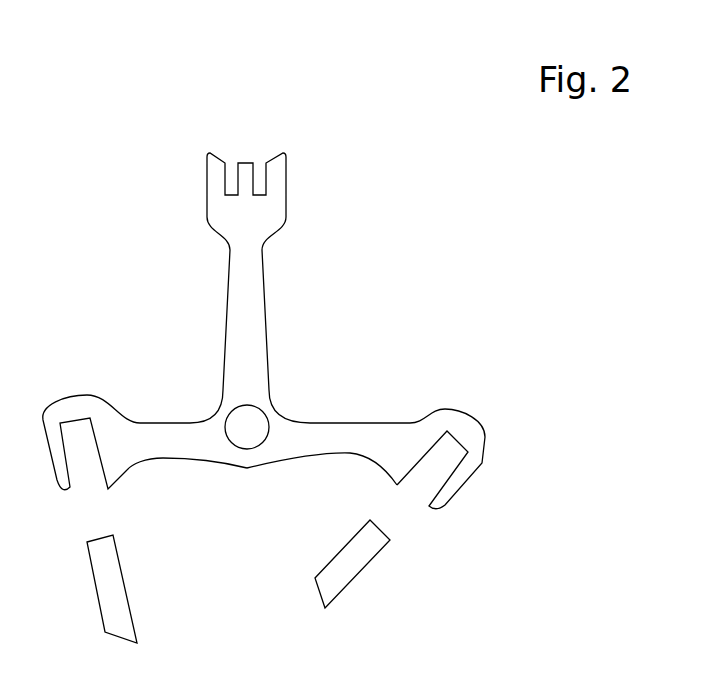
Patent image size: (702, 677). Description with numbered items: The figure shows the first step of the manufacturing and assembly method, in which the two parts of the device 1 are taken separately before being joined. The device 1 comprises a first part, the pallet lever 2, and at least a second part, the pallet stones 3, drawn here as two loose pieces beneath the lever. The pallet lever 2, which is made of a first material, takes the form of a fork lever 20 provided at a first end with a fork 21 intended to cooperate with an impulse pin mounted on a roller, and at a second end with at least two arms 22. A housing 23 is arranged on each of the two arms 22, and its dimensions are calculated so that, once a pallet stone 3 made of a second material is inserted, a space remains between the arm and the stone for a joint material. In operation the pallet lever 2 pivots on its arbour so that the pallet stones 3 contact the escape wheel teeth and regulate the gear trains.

The device 1 is at (375, 130).
The pallet lever 2 is at (272, 266).
The pallet stones 3 is at (120, 620).
The fork lever 20 is at (242, 313).
The fork 21 is at (215, 183).
The arms 22 is at (166, 438).
The housings 23 is at (440, 465).